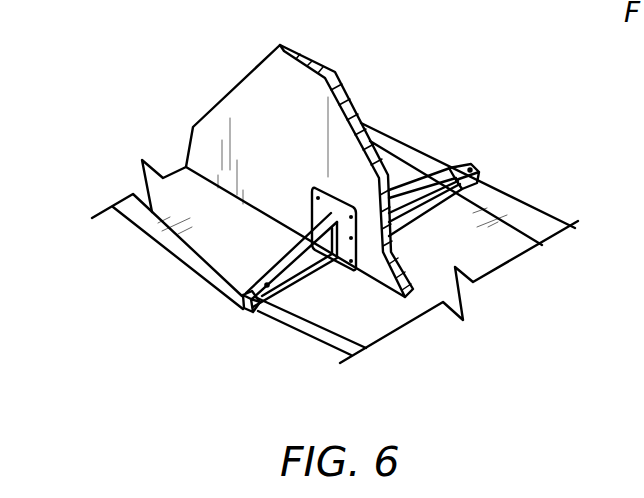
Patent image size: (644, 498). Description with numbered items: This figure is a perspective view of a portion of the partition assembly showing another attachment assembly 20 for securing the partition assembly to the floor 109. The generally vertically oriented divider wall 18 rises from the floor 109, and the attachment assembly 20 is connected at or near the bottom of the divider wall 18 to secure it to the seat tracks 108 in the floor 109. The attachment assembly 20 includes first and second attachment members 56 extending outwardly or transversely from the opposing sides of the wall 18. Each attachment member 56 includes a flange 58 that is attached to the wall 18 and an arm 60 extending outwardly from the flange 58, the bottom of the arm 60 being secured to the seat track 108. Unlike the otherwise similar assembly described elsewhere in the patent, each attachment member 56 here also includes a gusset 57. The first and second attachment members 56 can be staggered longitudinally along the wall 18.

The divider wall 18 is at (313, 63).
The attachment assembly 20 is at (240, 317).
The attachment member 56 is at (316, 277).
The gusset 57 is at (304, 290).
The flange 58 is at (348, 250).
The arm 60 is at (258, 308).
The seat track 108 is at (162, 233).
The floor 109 is at (492, 264).